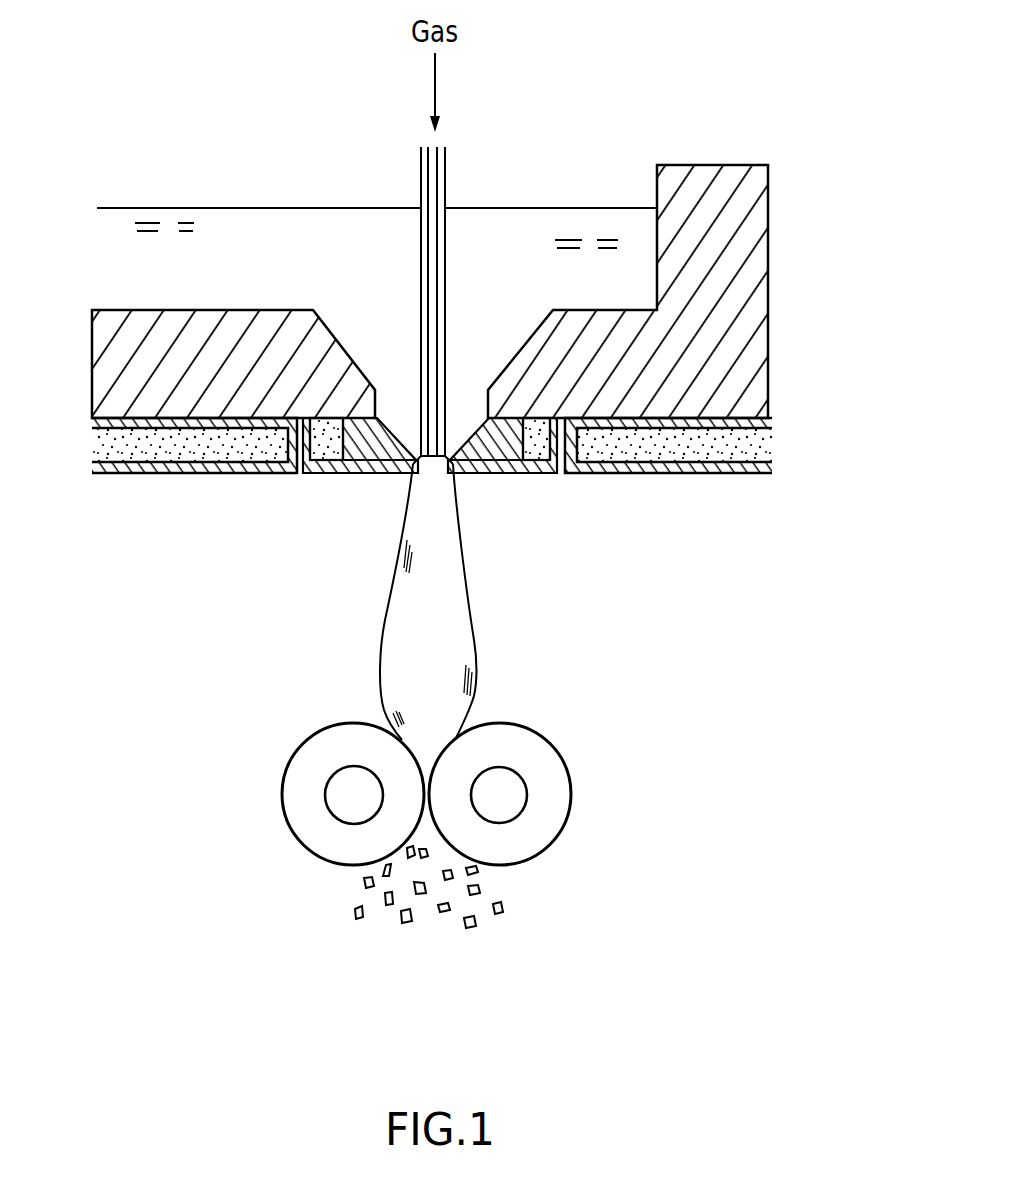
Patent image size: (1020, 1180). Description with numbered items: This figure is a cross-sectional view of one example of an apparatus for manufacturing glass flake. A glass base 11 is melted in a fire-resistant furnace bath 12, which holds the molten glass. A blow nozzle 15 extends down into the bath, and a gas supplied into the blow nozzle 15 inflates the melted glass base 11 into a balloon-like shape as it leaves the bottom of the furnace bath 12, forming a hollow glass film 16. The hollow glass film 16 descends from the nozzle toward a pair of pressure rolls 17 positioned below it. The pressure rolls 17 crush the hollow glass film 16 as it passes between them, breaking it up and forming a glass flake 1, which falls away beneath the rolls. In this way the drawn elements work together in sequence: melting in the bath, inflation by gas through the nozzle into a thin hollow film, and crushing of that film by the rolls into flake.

The glass flake 1 is at (503, 909).
The glass base 11 is at (248, 227).
The fire-resistant furnace bath 12 is at (726, 177).
The blow nozzle 15 is at (445, 170).
The hollow glass film 16 is at (463, 645).
The pressure rolls 17 is at (550, 790).